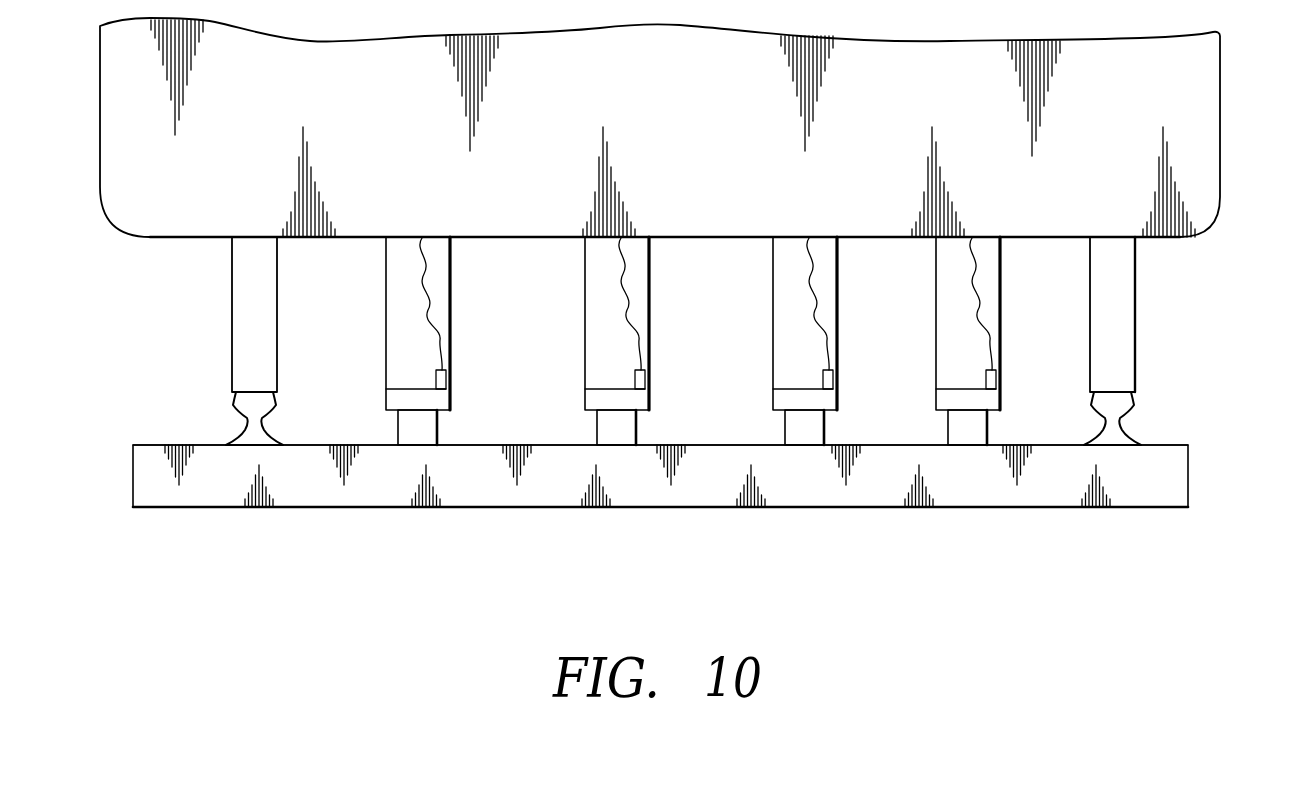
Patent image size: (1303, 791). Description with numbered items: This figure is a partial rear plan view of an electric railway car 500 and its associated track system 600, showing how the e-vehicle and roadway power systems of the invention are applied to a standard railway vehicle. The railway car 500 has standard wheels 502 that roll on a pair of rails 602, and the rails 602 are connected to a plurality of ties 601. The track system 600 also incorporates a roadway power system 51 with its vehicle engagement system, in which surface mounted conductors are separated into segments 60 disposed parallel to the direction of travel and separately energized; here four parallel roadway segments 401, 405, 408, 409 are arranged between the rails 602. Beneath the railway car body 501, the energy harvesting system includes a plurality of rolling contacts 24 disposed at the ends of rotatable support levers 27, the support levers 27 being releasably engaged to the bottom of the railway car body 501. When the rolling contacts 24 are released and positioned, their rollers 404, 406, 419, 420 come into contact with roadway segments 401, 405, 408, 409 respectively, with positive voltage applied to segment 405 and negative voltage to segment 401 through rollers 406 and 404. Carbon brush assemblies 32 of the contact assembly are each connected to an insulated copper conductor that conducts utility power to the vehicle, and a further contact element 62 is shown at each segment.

The roadway system 51 is at (1221, 132).
The railway car 500 is at (658, 160).
The railway car body 501 is at (703, 236).
The wheels 502 is at (232, 315).
The rails 602 is at (247, 430).
The segments 60 is at (1190, 476).
The ties 601 is at (1004, 488).
The track system 600 is at (918, 508).
The roller 419 is at (410, 403).
The roller 420 is at (609, 403).
The roller 404 is at (797, 403).
The roller 406 is at (960, 403).
The rotatable support levers 27 is at (452, 336).
The rolling contacts 24 is at (452, 362).
The carbon brush assemblies 32 is at (446, 380).
The substrate contact pad 62 is at (397, 432).
The roadway segment 408 is at (440, 432).
The roadway segment 409 is at (639, 432).
The roadway segment 405 is at (827, 432).
The roadway segment 401 is at (990, 432).